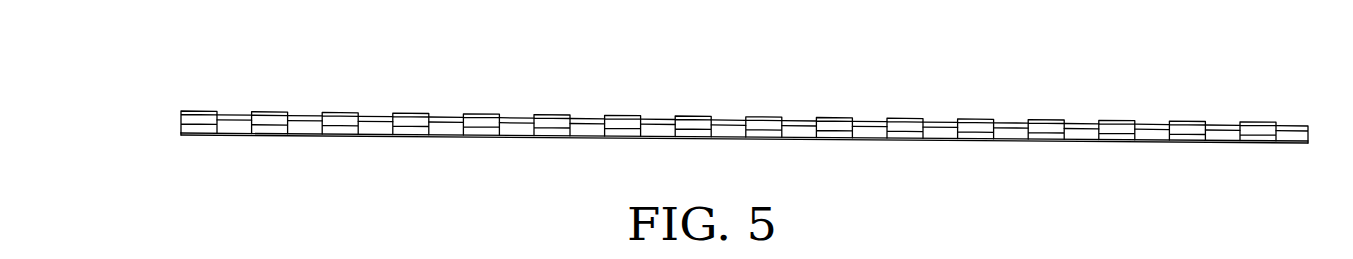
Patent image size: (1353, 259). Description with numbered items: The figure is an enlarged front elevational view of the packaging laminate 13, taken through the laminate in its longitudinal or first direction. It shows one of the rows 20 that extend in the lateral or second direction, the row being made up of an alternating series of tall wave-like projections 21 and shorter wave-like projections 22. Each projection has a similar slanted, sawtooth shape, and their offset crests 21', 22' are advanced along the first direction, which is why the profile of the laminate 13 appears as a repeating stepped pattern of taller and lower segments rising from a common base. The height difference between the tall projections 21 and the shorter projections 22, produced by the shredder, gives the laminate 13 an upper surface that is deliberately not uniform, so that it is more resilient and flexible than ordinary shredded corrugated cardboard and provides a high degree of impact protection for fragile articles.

The packaging laminate 13 is at (586, 59).
The rows 20 is at (131, 152).
The tall wave-like projections 21 is at (693, 86).
The shorter wave-like projections 22 is at (728, 81).
The offset crest of tall projection 21' is at (1262, 95).
The offset crest of shorter projection 22' is at (1302, 96).